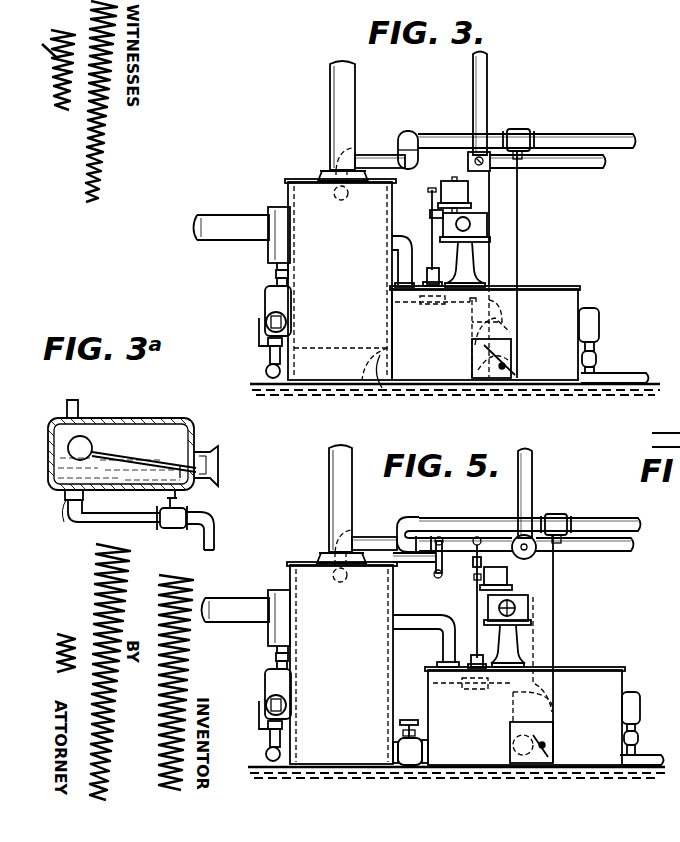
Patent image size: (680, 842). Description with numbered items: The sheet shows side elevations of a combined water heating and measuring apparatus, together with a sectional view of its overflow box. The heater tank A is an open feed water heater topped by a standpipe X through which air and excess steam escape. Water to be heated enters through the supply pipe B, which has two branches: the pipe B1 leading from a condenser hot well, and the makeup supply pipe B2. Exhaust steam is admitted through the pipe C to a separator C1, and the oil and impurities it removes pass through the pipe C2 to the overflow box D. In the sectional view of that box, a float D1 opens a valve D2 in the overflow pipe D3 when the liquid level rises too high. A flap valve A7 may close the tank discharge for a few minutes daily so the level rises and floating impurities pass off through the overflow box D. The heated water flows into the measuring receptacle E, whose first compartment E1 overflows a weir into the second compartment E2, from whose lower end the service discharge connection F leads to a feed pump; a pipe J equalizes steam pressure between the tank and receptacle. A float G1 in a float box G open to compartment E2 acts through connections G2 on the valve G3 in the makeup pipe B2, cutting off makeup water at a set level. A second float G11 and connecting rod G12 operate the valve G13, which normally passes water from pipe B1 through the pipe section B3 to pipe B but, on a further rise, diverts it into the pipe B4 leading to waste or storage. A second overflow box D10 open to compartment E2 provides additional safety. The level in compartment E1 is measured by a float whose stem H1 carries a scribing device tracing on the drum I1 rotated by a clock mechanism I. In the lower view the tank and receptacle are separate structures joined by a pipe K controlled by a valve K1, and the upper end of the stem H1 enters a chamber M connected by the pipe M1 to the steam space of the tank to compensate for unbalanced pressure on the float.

In FIG. 3, the standpipe X is at (338, 100).
In FIG. 5, the standpipe X is at (326, 513).
In FIG. 3, the heater tank A is at (340, 279).
In FIG. 5, the heater tank A is at (342, 663).
In FIG. 3, the flap valve A7 is at (382, 386).
In FIG. 3, the heater supply pipe B is at (368, 157).
In FIG. 5, the heater supply pipe B is at (369, 540).
In FIG. 3, the hot well branch pipe B1 is at (487, 77).
In FIG. 5, the hot well branch pipe B1 is at (533, 474).
In FIG. 3, the makeup supply pipe B2 is at (427, 135).
In FIG. 5, the makeup supply pipe B2 is at (612, 527).
In FIG. 3, the pipe section B3 is at (438, 170).
In FIG. 5, the pipe section B3 is at (422, 538).
In FIG. 3, the waste pipe B4 is at (570, 163).
In FIG. 5, the waste pipe B4 is at (600, 553).
In FIG. 3, the steam pipe C is at (229, 222).
In FIG. 5, the steam pipe C is at (236, 595).
In FIG. 3, the separator C1 is at (270, 250).
In FIG. 5, the separator C1 is at (258, 624).
In FIG. 3a, the impurity pipe C2 is at (76, 410).
In FIG. 3, the overflow box D is at (268, 297).
In FIG. 3a, the overflow box D is at (161, 420).
In FIG. 5, the overflow box D is at (275, 703).
In FIG. 3a, the float D1 is at (88, 440).
In FIG. 3a, the overflow valve D2 is at (174, 530).
In FIG. 3a, the overflow pipe D3 is at (118, 520).
In FIG. 3, the second overflow box D10 is at (599, 324).
In FIG. 5, the second overflow box D10 is at (638, 707).
In FIG. 3, the measuring receptacle E is at (553, 295).
In FIG. 5, the measuring receptacle E is at (607, 677).
In FIG. 3, the first compartment E1 is at (435, 317).
In FIG. 5, the first compartment E1 is at (471, 707).
In FIG. 3, the second compartment E2 is at (536, 328).
In FIG. 5, the second compartment E2 is at (580, 717).
In FIG. 3, the service discharge connection F is at (622, 375).
In FIG. 5, the service discharge connection F is at (628, 768).
In FIG. 3, the float box G is at (471, 371).
In FIG. 5, the float box G is at (510, 752).
In FIG. 3, the float G1 is at (472, 345).
In FIG. 3, the float connections G2 is at (519, 245).
In FIG. 5, the float connections G2 is at (556, 614).
In FIG. 3, the makeup valve G3 is at (517, 131).
In FIG. 5, the makeup valve G3 is at (515, 538).
In FIG. 3, the second float G11 is at (472, 322).
In FIG. 3, the connecting rod G12 is at (491, 209).
In FIG. 5, the connecting rod G12 is at (535, 645).
In FIG. 3, the diverting valve G13 is at (478, 171).
In FIG. 5, the float stem H1 is at (477, 606).
In FIG. 5, the clock mechanism I is at (540, 604).
In FIG. 5, the record drum I1 is at (507, 575).
In FIG. 5, the equalizing pipe J is at (405, 626).
In FIG. 5, the connecting pipe K is at (420, 768).
In FIG. 5, the valve K1 is at (397, 744).
In FIG. 5, the chamber M is at (474, 556).
In FIG. 5, the pipe M1 is at (430, 566).